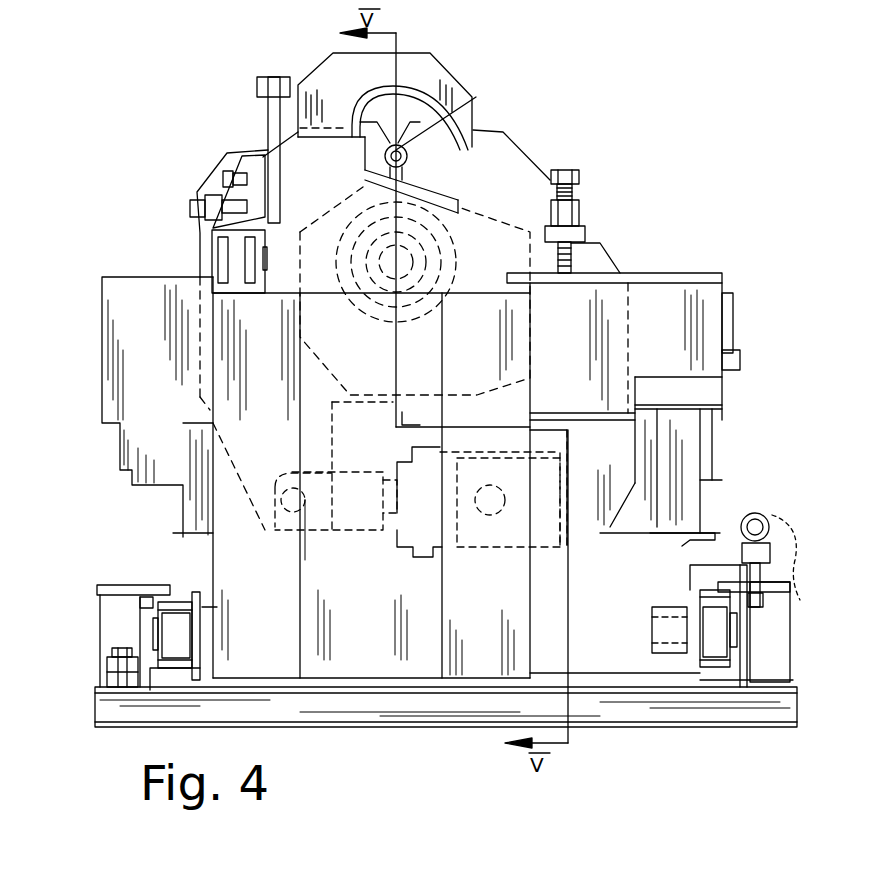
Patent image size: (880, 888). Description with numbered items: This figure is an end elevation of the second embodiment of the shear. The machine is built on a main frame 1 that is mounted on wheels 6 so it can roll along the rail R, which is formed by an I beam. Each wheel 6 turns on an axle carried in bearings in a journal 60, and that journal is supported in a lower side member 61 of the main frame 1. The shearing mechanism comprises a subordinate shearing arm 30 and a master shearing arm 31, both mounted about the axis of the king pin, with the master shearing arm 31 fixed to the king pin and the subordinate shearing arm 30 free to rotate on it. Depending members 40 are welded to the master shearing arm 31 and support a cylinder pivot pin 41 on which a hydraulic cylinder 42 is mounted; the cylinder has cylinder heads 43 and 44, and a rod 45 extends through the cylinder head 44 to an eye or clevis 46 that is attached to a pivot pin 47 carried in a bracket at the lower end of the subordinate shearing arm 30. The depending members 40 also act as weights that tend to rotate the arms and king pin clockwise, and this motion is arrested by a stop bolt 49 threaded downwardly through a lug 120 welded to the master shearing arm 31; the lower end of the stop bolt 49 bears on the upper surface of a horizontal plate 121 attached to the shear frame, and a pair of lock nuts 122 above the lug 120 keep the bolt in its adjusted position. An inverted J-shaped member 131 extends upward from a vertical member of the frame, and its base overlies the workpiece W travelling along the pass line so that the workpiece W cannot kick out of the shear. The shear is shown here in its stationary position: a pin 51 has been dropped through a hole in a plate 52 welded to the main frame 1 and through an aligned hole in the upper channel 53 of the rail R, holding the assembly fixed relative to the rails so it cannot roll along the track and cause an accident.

The main frame 1 is at (716, 522).
The wheels 6 is at (183, 644).
The subordinate shearing arm 30 is at (313, 162).
The master shearing arm 31 is at (506, 158).
The depending members 40 is at (623, 462).
The cylinder pivot pin 41 is at (494, 515).
The hydraulic cylinder 42 is at (455, 545).
The cylinder head 43 is at (578, 548).
The cylinder head 44 is at (430, 557).
The rod 45 is at (395, 535).
The eye or clevis 46 is at (355, 527).
The pivot pin 47 is at (290, 510).
The stop bolt 49 is at (565, 170).
The pin 51 is at (761, 572).
The plate 52 is at (776, 532).
The upper channel 53 is at (780, 606).
The journal 60 is at (660, 647).
The lower side member 61 is at (200, 540).
The lug 120 is at (581, 231).
The horizontal plate 121 is at (667, 273).
The lock nuts 122 is at (578, 198).
The inverted J-shaped member 131 is at (440, 76).
The workpiece W is at (473, 99).
The rail R is at (147, 688).